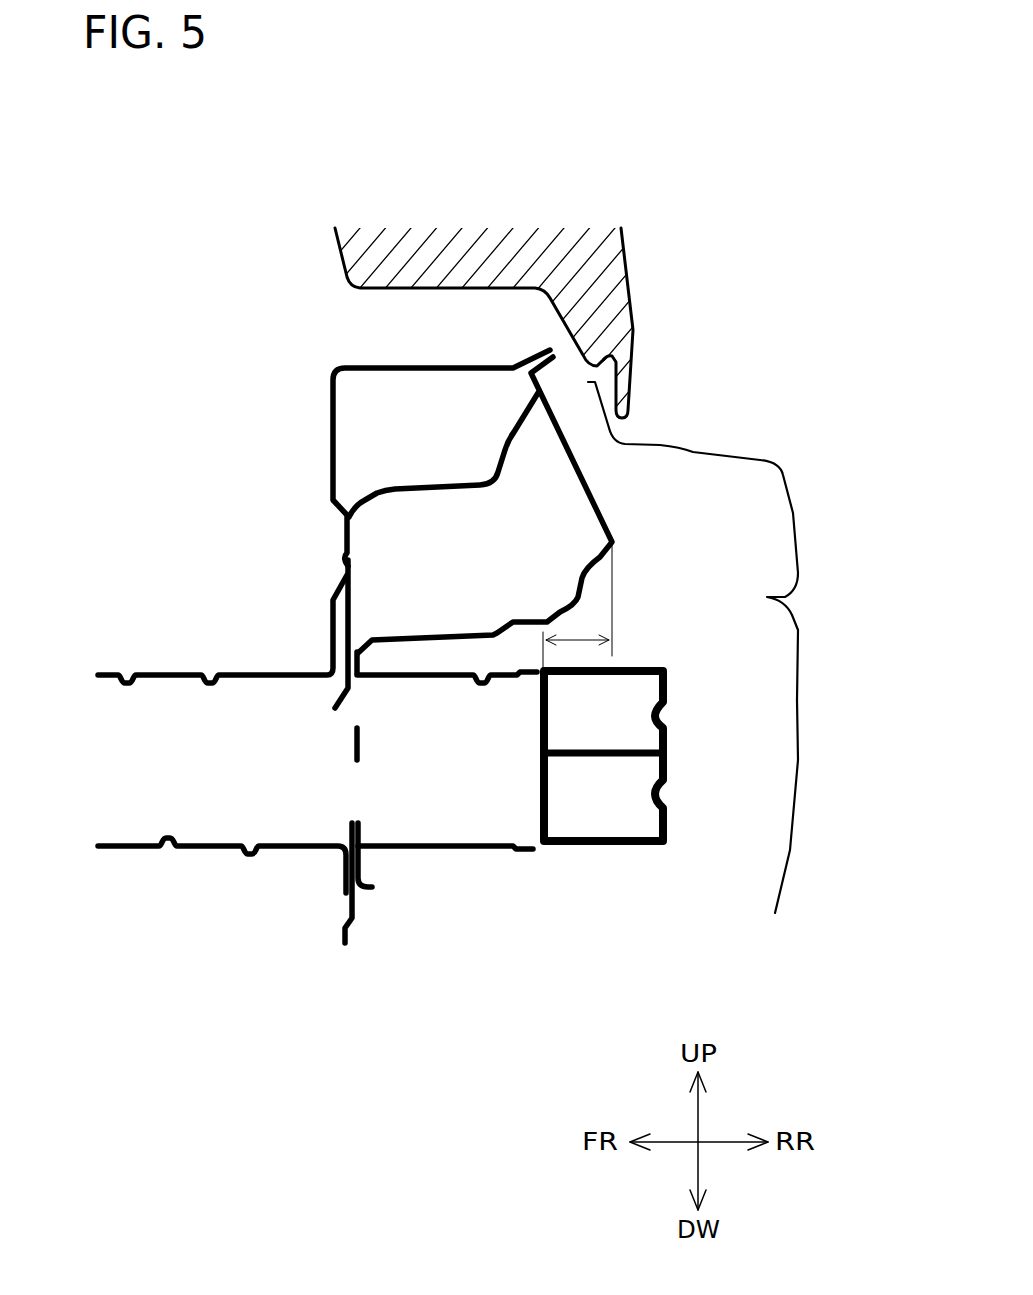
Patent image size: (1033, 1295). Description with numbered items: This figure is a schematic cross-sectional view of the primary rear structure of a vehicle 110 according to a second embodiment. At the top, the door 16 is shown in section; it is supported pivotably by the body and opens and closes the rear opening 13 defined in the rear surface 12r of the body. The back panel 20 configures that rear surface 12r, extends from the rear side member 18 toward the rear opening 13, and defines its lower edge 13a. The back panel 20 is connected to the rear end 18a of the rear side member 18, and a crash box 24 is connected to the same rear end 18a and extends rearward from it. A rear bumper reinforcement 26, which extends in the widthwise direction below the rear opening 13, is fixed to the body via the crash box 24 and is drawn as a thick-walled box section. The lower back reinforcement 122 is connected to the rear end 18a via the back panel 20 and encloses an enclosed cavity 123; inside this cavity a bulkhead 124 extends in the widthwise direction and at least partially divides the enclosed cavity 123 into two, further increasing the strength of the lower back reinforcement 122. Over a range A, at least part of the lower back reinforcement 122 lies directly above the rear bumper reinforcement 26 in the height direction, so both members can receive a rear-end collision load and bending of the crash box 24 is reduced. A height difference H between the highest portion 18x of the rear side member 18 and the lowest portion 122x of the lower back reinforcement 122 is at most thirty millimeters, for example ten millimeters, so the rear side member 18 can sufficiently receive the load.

The vehicle 110 is at (186, 201).
The door 16 is at (590, 262).
The rear opening 13 is at (512, 325).
The lower edge 13a is at (556, 350).
The rear surface 12r is at (807, 440).
The enclosed cavity 123 is at (370, 410).
The bulkhead 124 is at (383, 490).
The lower back reinforcement 122 is at (590, 490).
The lowest portion 122x is at (355, 650).
The range A is at (580, 645).
The height difference H is at (82, 603).
The highest portion 18x is at (187, 665).
The rear side member 18 is at (127, 850).
The rear end 18a is at (356, 866).
The back panel 20 is at (330, 655).
The crash box 24 is at (482, 850).
The rear bumper reinforcement 26 is at (672, 778).